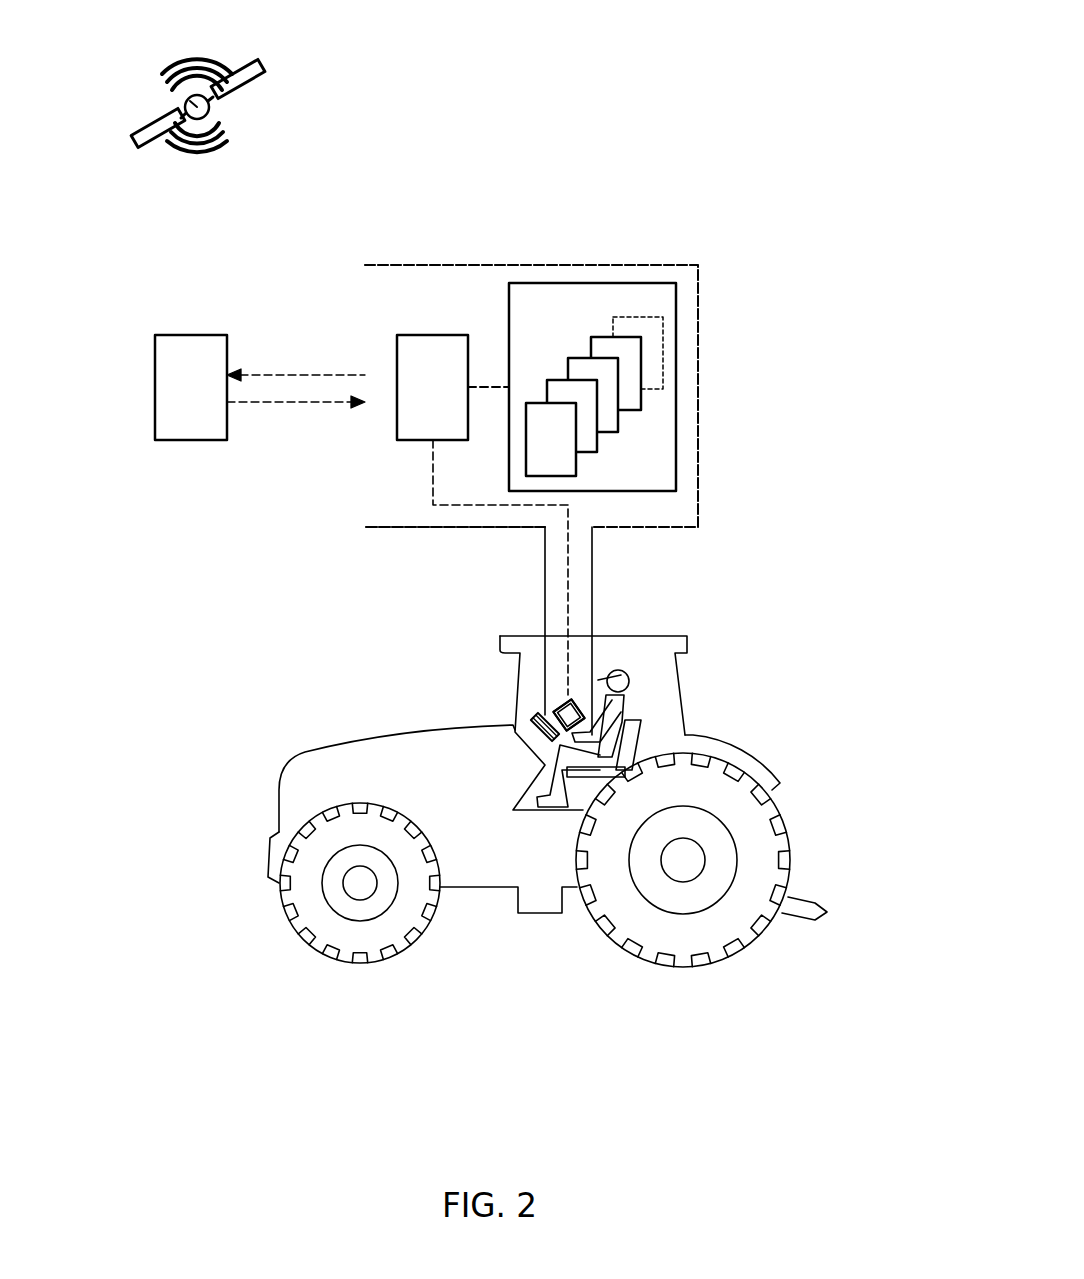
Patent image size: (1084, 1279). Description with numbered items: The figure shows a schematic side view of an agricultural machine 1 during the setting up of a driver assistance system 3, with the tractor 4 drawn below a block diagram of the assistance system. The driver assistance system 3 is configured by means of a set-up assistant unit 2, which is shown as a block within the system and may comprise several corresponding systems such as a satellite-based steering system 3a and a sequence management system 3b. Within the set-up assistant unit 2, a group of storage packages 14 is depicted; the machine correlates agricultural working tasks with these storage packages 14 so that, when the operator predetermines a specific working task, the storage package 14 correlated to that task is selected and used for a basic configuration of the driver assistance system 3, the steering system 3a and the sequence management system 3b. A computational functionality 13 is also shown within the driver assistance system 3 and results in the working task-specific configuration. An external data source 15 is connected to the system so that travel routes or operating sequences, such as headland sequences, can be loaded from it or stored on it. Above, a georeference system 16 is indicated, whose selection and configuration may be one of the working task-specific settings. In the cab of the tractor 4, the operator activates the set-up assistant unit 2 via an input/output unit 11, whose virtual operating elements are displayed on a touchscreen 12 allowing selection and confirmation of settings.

The agricultural machine 1 is at (918, 124).
The set-up assistant unit 2 is at (585, 283).
The driver assistance system 3 is at (697, 295).
The satellite-based steering system 3a is at (697, 348).
The sequence management system 3b is at (531, 396).
The agricultural vehicle (tractor) 4 is at (815, 625).
The input/output unit 11 is at (538, 708).
The touchscreen 12 is at (568, 714).
The computational functionality 13 is at (440, 335).
The storage packages 14 is at (578, 470).
The external data source 15 is at (190, 357).
The georeference system 16 is at (183, 104).